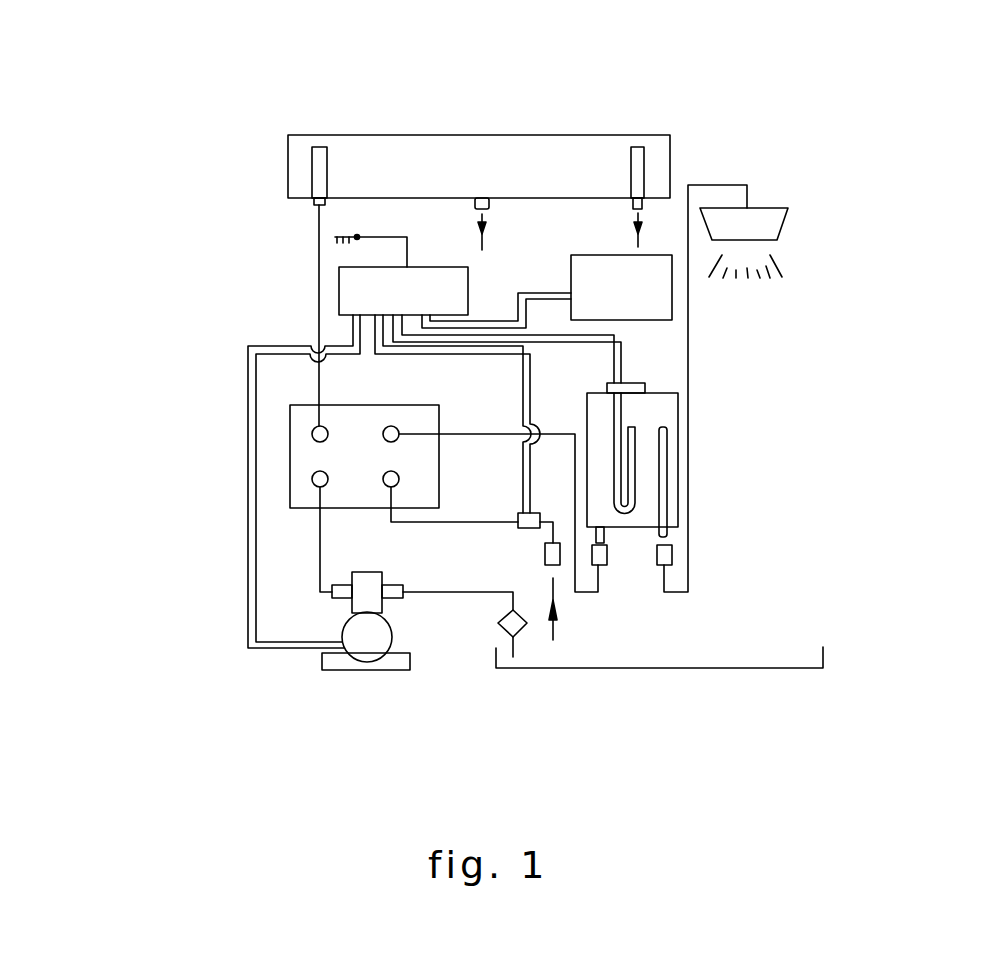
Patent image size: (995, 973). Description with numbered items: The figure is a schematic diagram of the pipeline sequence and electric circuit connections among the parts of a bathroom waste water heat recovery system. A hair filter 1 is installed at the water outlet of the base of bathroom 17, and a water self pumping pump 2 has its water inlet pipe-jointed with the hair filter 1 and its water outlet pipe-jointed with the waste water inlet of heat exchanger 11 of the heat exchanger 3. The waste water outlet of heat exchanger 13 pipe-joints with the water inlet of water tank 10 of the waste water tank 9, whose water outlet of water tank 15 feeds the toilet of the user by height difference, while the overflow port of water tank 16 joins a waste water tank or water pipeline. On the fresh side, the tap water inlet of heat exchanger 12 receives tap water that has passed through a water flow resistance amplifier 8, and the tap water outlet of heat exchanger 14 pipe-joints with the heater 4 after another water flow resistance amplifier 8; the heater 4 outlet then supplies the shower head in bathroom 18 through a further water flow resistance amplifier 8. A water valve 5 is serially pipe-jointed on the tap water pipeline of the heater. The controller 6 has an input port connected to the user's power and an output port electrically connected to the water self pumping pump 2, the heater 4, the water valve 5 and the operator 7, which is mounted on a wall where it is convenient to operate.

The hair filter 1 is at (319, 703).
The water self pumping pump 2 is at (326, 625).
The heat exchanger 3 is at (275, 496).
The heater 4 is at (723, 460).
The water valve 5 is at (236, 492).
The controller 6 is at (290, 275).
The operator 7 is at (715, 296).
The water flow resistance amplifiers 8 is at (601, 565).
The waste water tank 9 is at (391, 103).
The water inlet of water tank 10 is at (219, 273).
The waste water inlet of heat exchanger 11 is at (220, 492).
The tap water inlet of heat exchanger 12 is at (255, 453).
The waste water outlet of heat exchanger 13 is at (220, 403).
The tap water outlet of heat exchanger 14 is at (255, 375).
The water outlet of water tank 15 is at (300, 216).
The overflow port of water tank 16 is at (378, 154).
The base of bathroom 17 is at (683, 616).
The shower head in bathroom 18 is at (765, 363).